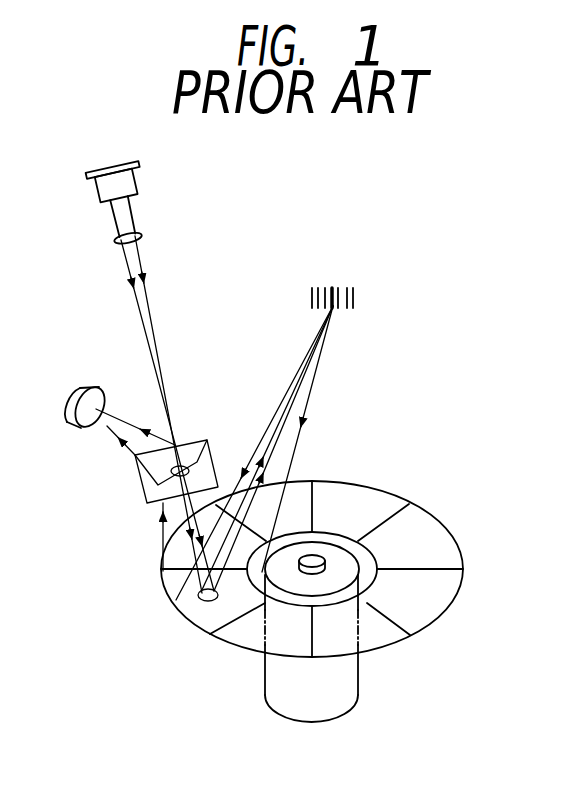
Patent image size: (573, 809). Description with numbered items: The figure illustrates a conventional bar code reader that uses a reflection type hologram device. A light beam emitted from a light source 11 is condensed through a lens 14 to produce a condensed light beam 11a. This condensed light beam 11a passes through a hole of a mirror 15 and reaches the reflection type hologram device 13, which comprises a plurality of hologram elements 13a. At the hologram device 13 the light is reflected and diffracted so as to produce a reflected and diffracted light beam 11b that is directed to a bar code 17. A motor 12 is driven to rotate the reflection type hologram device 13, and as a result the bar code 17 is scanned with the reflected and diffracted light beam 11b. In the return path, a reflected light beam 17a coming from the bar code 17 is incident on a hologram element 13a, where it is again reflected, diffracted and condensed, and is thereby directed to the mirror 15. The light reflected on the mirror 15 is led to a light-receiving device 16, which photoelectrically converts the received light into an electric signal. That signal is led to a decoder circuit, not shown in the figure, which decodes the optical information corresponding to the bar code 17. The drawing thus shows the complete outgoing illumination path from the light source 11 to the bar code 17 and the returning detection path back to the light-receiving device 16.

The light source 11 is at (138, 182).
The lens 14 is at (142, 236).
The condensed light beam 11a is at (150, 296).
The mirror 15 is at (146, 491).
The light-receiving device 16 is at (82, 385).
The bar code 17 is at (357, 295).
The reflected and diffracted light beam 11b is at (318, 355).
The reflected light beam 17a is at (298, 370).
The reflection type hologram device 13 is at (460, 555).
The hologram elements 13a is at (389, 505).
The motor 12 is at (358, 683).